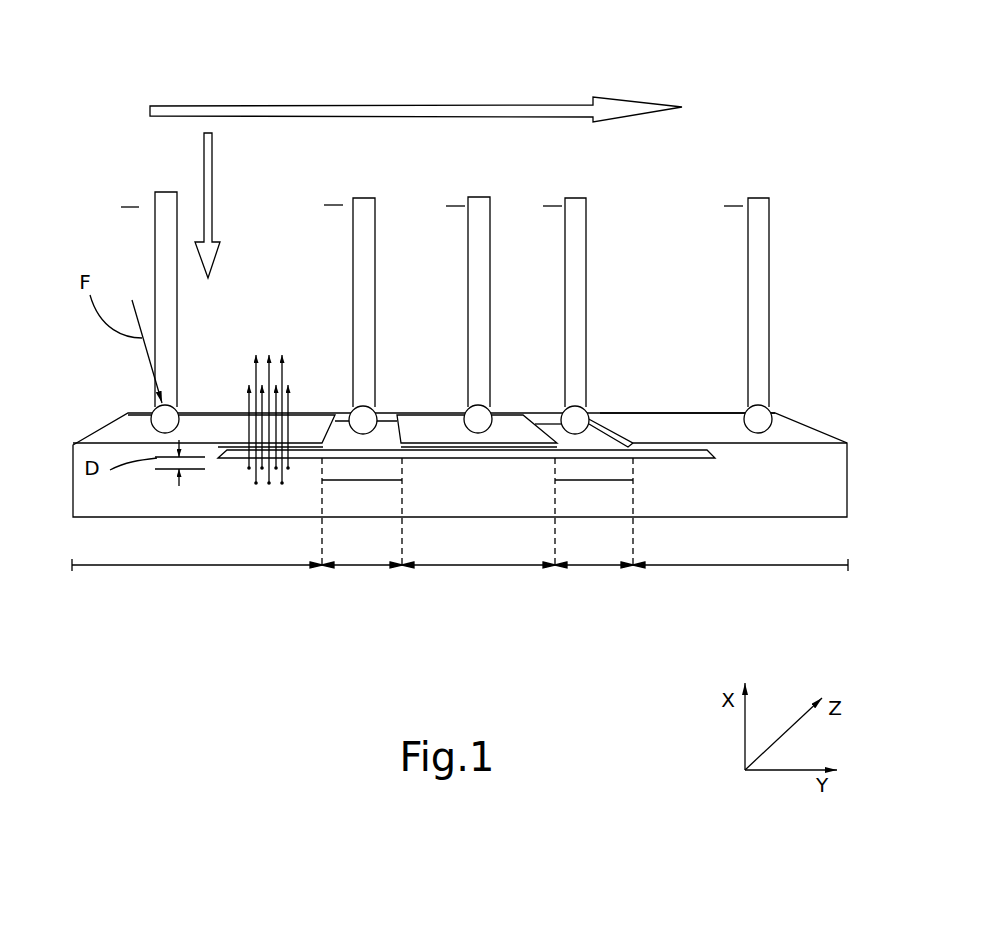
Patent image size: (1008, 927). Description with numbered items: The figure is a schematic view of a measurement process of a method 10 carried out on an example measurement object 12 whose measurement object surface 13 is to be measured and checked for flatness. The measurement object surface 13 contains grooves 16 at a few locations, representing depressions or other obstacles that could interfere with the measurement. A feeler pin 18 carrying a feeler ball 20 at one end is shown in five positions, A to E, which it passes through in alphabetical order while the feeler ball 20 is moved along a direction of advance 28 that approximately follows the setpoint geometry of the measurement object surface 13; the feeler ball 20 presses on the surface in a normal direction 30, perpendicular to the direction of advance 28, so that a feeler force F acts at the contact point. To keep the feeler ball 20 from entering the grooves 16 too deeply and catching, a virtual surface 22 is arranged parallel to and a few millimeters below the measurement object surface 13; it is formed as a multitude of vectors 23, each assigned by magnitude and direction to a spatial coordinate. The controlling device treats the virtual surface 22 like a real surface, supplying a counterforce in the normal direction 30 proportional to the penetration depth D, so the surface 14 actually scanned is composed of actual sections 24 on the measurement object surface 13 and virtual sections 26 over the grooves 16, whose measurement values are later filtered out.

The method 10 is at (200, 692).
The measurement object 12 is at (810, 463).
The measurement object surface 13 is at (220, 432).
The surface 14 is at (593, 428).
The grooves 16 is at (387, 417).
The feeler pin 18 is at (166, 296).
The feeler ball 20 is at (158, 409).
The virtual surface 22 is at (685, 462).
The vectors 23 is at (263, 493).
The actual sections 24 is at (212, 567).
The virtual sections 26 is at (358, 567).
The direction of advance 28 is at (446, 105).
The normal direction 30 is at (207, 212).